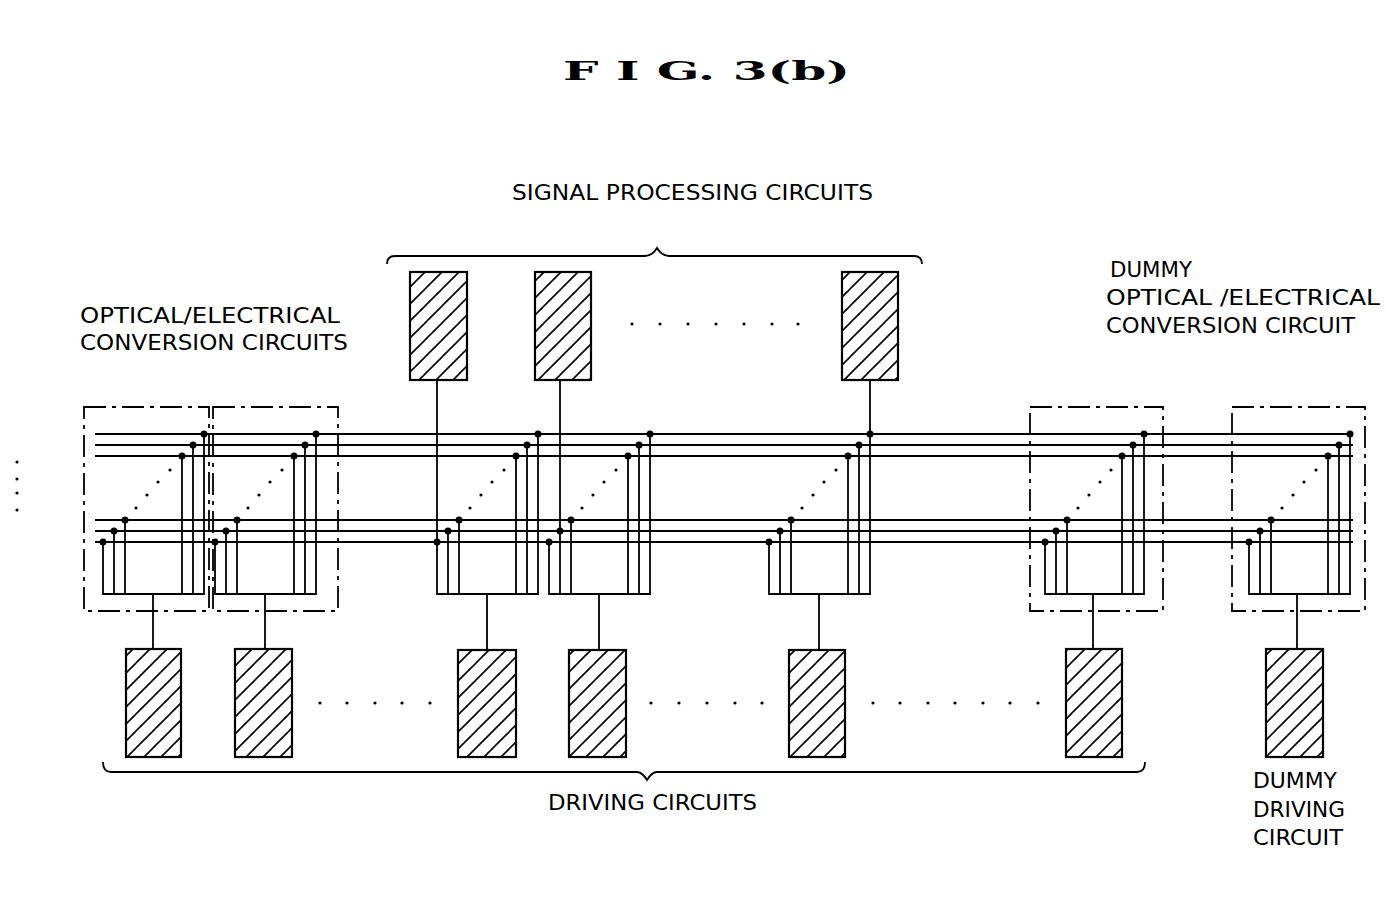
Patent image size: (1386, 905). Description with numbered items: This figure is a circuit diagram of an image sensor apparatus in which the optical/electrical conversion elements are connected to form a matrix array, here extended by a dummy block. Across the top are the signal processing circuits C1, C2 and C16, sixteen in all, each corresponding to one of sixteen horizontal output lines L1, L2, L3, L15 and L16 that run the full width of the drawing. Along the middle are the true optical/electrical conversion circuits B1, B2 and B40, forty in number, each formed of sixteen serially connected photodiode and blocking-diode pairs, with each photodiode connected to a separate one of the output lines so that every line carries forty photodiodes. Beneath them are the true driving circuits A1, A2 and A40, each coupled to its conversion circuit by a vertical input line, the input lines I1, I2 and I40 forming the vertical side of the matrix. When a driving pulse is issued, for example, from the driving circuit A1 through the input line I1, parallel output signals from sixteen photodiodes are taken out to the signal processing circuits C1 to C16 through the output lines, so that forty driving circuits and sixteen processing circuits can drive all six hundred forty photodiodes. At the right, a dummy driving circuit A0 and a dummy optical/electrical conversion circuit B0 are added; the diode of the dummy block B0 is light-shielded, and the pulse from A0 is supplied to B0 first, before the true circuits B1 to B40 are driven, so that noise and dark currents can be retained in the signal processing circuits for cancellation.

The optical/electrical conversion circuit B1 is at (105, 407).
The optical/electrical conversion circuit B2 is at (300, 407).
The optical/electrical conversion circuit B40 is at (1120, 407).
The dummy optical/electrical conversion circuit B0 is at (1332, 407).
The signal processing circuit C1 is at (430, 278).
The signal processing circuit C2 is at (562, 280).
The signal processing circuit C16 is at (868, 282).
The driving circuit A1 is at (136, 708).
The driving circuit A2 is at (246, 704).
The driving circuit A40 is at (1110, 722).
The dummy driving circuit A0 is at (1317, 725).
The output line L1 is at (97, 542).
The output line L2 is at (97, 531).
The output line L3 is at (97, 520).
The output line L15 is at (95, 445).
The output line L16 is at (97, 434).
The input line I1 is at (156, 630).
The input line I2 is at (268, 630).
The input line I40 is at (1096, 630).